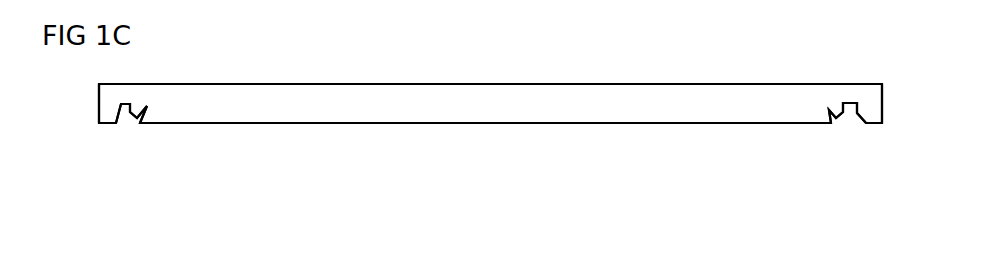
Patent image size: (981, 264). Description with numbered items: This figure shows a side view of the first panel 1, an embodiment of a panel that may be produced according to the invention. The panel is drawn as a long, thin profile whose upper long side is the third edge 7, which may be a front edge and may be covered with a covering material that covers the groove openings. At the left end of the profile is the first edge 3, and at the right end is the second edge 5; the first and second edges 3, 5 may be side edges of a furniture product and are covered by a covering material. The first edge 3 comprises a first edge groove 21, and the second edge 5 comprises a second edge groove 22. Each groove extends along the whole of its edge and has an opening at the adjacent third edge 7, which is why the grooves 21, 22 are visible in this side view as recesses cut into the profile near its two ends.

The first panel 1 is at (542, 84).
The third edge 7 is at (425, 102).
The first edge 3 is at (98, 108).
The second edge 5 is at (882, 108).
The first edge groove 21 is at (129, 113).
The second edge groove 22 is at (849, 117).